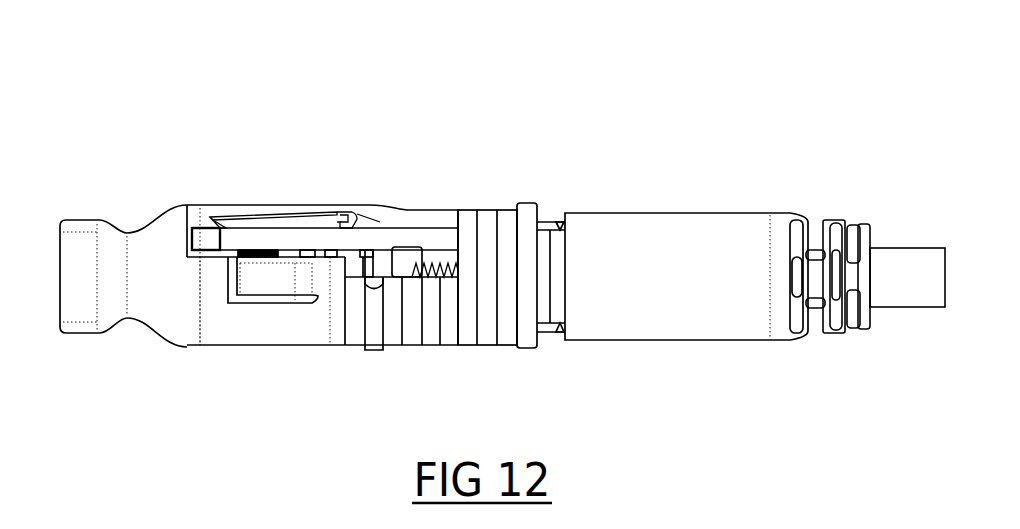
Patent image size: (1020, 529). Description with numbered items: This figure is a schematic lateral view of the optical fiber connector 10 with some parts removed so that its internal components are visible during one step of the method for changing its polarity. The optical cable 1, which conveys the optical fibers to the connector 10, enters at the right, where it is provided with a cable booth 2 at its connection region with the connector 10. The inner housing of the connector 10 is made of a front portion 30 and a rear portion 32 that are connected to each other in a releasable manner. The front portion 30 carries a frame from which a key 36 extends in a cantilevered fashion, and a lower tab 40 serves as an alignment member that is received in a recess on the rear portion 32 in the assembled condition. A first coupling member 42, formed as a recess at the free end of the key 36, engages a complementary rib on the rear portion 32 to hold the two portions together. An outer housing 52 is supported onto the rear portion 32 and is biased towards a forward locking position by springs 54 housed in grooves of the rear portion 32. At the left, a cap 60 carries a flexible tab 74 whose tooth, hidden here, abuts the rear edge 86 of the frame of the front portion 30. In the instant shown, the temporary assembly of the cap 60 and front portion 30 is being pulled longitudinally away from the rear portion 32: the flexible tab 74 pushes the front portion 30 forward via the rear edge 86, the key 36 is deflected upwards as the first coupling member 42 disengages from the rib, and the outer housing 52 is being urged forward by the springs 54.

The optical fiber connector 10 is at (630, 108).
The cap 60 is at (142, 246).
The front portion 30 is at (202, 240).
The rear portion 32 is at (412, 240).
The key 36 is at (312, 216).
The lower tab 40 is at (338, 220).
The first coupling member 42 is at (340, 222).
The outer housing 52 is at (493, 228).
The springs 54 is at (440, 277).
The flexible tab 74 is at (279, 284).
The rear edge 86 is at (250, 306).
The cable booth 2 is at (753, 248).
The optical cable 1 is at (916, 268).